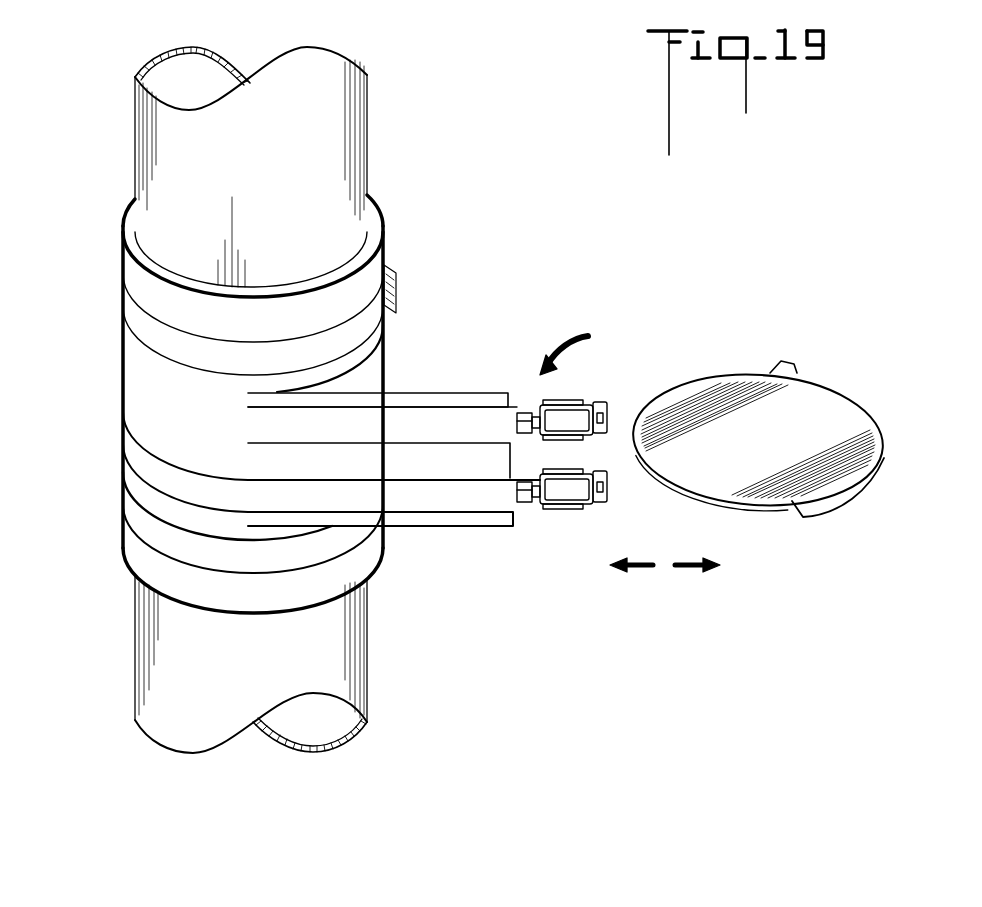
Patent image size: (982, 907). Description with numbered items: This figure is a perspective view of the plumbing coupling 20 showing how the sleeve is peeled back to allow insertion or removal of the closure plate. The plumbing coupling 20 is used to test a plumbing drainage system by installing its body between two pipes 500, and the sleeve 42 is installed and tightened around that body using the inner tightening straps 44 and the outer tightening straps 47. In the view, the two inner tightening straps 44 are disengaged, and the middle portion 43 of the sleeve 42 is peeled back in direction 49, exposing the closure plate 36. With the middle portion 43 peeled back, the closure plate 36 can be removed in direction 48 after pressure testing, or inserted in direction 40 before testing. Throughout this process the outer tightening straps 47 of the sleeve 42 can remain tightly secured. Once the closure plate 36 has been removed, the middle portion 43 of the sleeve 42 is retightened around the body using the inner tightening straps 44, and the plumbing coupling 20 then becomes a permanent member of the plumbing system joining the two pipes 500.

The plumbing coupling 20 is at (69, 233).
The pipes 500 is at (370, 172).
The sleeve 42 is at (371, 268).
The outer tightening straps 47 is at (398, 292).
The inner tightening straps 44 is at (468, 428).
The middle portion 43 is at (380, 455).
The direction 49 is at (570, 369).
The closure plate 36 is at (797, 421).
The direction 48 is at (702, 562).
The direction 40 is at (633, 570).